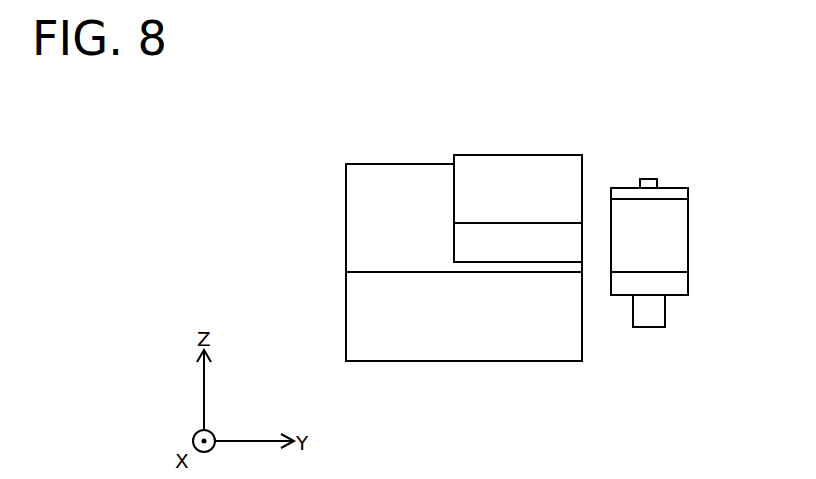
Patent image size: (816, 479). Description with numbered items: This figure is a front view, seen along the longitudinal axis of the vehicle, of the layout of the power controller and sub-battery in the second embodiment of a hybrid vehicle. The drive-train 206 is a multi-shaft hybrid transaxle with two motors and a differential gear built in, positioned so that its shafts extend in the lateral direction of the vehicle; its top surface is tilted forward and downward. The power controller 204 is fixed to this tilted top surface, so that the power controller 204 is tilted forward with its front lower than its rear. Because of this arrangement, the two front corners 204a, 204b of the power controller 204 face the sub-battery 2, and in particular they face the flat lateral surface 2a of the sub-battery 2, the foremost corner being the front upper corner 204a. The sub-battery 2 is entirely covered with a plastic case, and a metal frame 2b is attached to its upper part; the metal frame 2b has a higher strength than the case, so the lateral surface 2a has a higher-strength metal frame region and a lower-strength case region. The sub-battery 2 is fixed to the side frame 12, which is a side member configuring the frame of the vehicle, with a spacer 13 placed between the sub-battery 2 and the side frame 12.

The drive-train 206 is at (379, 176).
The power controller 204 is at (486, 176).
The front upper corner 204a is at (584, 221).
The front corner 204b is at (585, 272).
The sub-battery 2 is at (673, 185).
The metal frame 2b is at (689, 194).
The lateral surface 2a is at (600, 226).
The spacer 13 is at (680, 280).
The side frame 12 is at (660, 308).